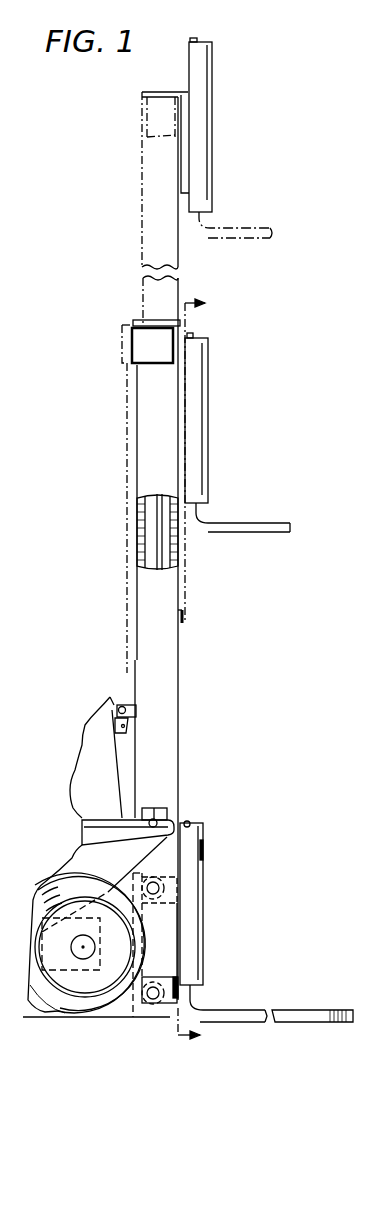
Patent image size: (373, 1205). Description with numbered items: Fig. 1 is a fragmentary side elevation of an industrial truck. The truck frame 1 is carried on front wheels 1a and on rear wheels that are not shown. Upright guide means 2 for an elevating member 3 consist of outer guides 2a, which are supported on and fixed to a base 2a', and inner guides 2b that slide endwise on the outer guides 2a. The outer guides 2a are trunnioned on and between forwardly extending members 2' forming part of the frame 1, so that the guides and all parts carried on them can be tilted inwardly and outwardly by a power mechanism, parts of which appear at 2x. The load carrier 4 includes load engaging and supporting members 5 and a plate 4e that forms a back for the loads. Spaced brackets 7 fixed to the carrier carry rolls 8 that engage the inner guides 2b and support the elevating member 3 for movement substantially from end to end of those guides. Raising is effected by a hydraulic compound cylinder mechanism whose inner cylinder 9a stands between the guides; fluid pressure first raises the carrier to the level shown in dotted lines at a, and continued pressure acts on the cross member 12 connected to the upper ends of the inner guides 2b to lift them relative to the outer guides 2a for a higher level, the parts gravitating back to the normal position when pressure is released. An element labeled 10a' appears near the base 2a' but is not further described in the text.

The truck frame 1 is at (60, 850).
The front wheels 1a is at (73, 1008).
The upright guide means 2 is at (254, 669).
The outer guides 2a is at (173, 518).
The inner guides 2b is at (155, 238).
The power mechanism 2x is at (112, 703).
The forwardly extending members 2' is at (128, 838).
The base 2a' is at (146, 1015).
The elevating member 3 is at (200, 674).
The load carrier 4 is at (205, 170).
The plate 4e is at (200, 860).
The load engaging and supporting member 5 is at (250, 237).
The brackets 7 is at (165, 920).
The rolls 8 is at (177, 890).
The inner cylinder 9a is at (167, 550).
The frame 10a' is at (106, 961).
The cross member 12 is at (152, 318).
The raised position a is at (232, 463).